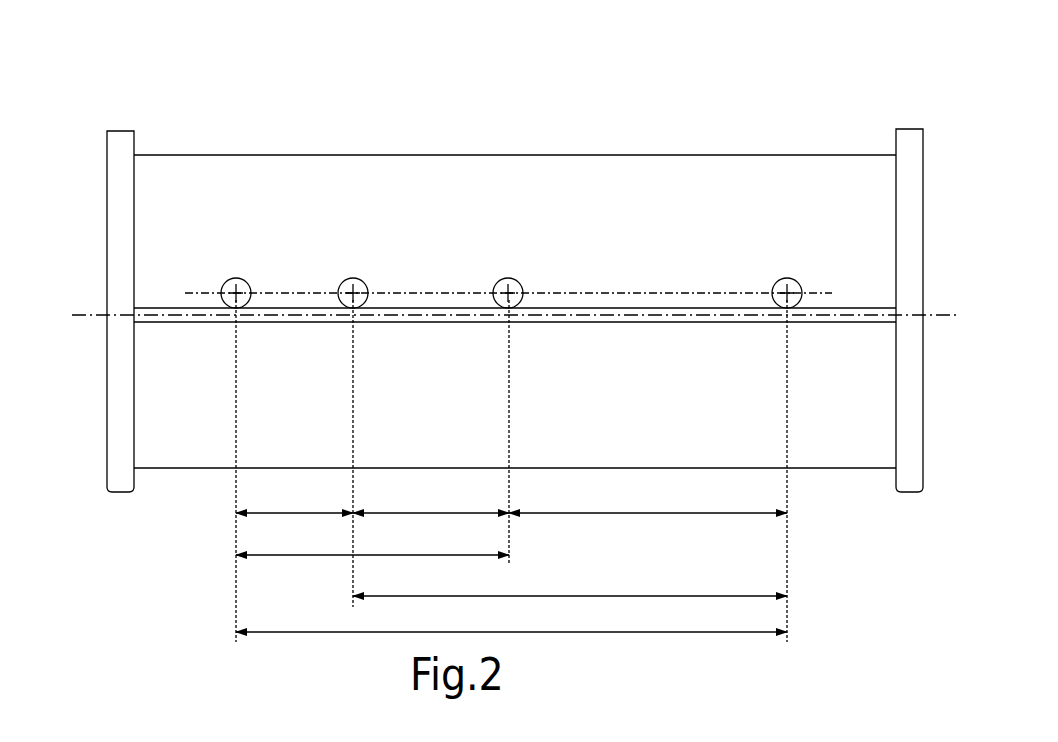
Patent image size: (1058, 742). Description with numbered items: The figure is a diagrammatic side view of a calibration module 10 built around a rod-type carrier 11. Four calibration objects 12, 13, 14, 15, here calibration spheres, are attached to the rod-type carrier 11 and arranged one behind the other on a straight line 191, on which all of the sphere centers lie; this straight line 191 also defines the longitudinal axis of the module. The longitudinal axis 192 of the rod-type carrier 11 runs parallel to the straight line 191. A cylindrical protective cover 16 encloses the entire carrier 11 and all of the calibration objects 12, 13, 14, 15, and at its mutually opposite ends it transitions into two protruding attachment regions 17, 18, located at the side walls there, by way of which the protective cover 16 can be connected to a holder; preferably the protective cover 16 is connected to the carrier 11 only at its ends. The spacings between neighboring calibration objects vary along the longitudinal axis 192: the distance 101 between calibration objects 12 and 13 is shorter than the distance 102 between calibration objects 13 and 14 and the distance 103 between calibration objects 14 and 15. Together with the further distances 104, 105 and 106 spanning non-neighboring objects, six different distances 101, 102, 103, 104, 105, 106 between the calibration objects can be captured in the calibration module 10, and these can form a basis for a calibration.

The calibration module 10 is at (413, 150).
The rod-type carrier 11 is at (652, 320).
The calibration object 12 is at (243, 281).
The calibration object 13 is at (360, 281).
The calibration object 14 is at (513, 282).
The calibration object 15 is at (792, 281).
The protective cover 16 is at (655, 178).
The attachment region 17 is at (905, 137).
The attachment region 18 is at (120, 167).
The straight line 191 is at (203, 291).
The longitudinal axis 192 is at (88, 316).
The distance 101 is at (294, 492).
The distance 102 is at (431, 492).
The distance 103 is at (648, 492).
The distance 104 is at (372, 535).
The distance 105 is at (570, 577).
The distance 106 is at (511, 615).